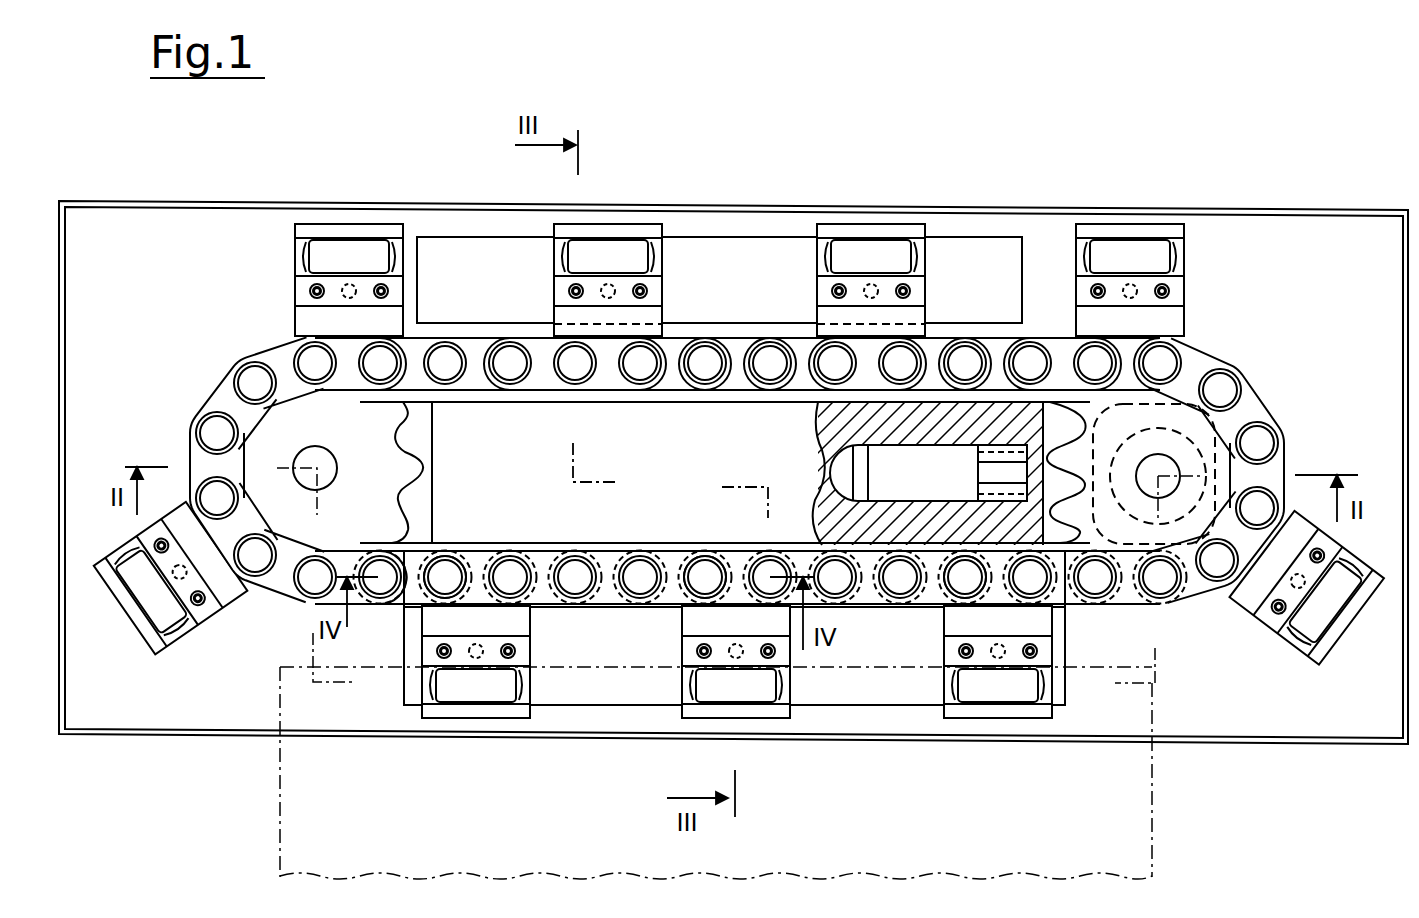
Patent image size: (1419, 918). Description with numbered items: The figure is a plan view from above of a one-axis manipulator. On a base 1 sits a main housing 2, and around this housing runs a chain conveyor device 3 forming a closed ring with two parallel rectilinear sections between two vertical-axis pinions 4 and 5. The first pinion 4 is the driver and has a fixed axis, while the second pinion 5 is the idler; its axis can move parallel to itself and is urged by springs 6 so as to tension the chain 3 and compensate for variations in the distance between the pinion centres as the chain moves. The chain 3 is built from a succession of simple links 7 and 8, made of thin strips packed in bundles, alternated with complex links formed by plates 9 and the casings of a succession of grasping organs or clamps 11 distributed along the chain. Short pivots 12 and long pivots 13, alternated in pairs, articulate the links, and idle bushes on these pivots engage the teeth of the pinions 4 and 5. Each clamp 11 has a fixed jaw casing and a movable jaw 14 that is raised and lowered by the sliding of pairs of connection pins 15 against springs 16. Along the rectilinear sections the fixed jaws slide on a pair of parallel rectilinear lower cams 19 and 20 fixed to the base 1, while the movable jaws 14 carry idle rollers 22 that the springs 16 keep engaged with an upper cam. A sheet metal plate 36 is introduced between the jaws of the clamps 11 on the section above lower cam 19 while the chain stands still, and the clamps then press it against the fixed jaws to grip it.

The base 1 is at (1248, 237).
The main housing 2 is at (458, 492).
The chain conveyor device 3 is at (986, 340).
The driver pinion 4 is at (270, 437).
The idler pinion 5 is at (1198, 446).
The springs 6 is at (1003, 445).
The simple link 7 is at (682, 352).
The simple link 8 is at (740, 350).
The plates 9 is at (463, 594).
The grasping organ 11 is at (330, 222).
The short pivot 12 is at (565, 572).
The long pivot 13 is at (505, 572).
The movable jaw 14 is at (307, 318).
The connection pins 15 is at (310, 288).
The springs 16 is at (352, 280).
The lower cam 19 is at (403, 692).
The lower cam 20 is at (690, 255).
The idle rollers 22 is at (327, 247).
The sheet metal plate 36 is at (1130, 824).